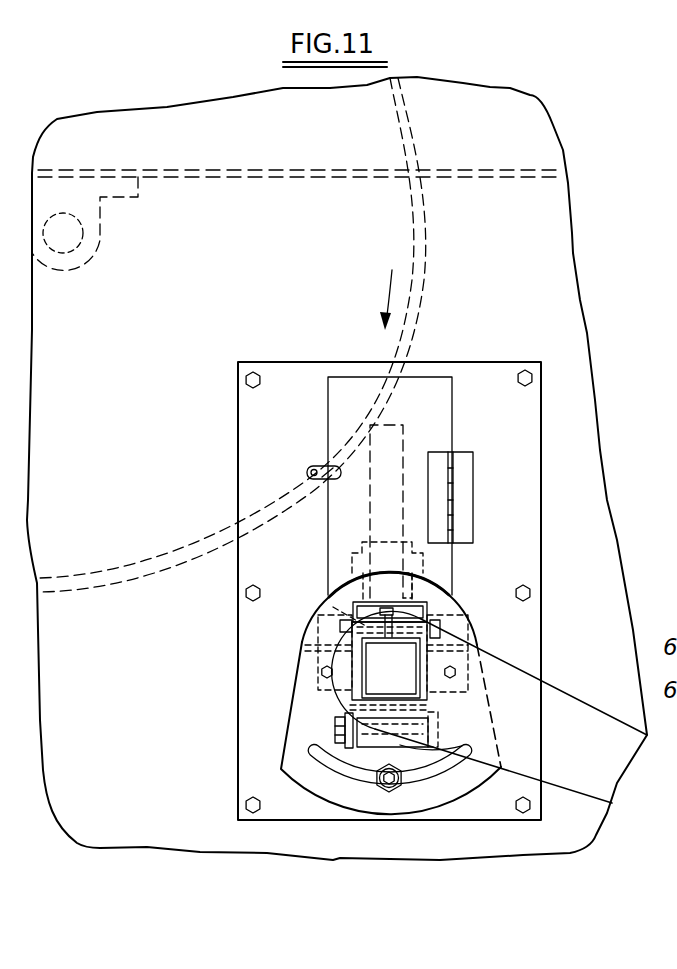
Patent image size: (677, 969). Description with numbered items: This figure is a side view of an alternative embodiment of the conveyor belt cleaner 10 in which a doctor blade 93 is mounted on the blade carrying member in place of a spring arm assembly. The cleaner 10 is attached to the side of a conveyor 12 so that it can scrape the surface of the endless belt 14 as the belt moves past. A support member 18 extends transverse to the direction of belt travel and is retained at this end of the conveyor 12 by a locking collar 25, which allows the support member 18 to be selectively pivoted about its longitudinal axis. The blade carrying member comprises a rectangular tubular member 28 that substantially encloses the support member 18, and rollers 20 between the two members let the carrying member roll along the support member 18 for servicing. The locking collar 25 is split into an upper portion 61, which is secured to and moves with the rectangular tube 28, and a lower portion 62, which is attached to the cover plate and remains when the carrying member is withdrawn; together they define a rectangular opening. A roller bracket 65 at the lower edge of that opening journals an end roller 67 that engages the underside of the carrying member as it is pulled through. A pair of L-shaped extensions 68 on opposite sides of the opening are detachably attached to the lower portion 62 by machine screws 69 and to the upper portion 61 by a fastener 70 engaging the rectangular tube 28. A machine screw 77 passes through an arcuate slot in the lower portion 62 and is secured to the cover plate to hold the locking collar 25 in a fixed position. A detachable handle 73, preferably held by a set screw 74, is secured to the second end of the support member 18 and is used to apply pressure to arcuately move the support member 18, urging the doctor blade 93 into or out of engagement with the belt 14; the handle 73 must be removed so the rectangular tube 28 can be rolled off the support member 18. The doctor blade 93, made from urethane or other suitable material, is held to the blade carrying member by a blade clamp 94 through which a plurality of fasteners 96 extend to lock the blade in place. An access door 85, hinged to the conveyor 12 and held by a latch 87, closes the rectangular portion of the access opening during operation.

The conveyor belt cleaner 10 is at (503, 353).
The conveyor 12 is at (606, 295).
The endless belt 14 is at (427, 228).
The support member 18 is at (420, 694).
The rollers 20 is at (427, 610).
The locking collar 25 is at (302, 722).
The rectangular tubular member 28 is at (343, 698).
The upper portion 61 is at (342, 604).
The lower portion 62 is at (292, 753).
The roller bracket 65 is at (348, 745).
The end roller 67 is at (403, 745).
The L-shaped extensions 68 is at (457, 628).
The machine screws 69 is at (320, 672).
The fastener 70 is at (340, 630).
The detachable handle 73 is at (578, 710).
The set screw 74 is at (333, 607).
The machine screw 77 is at (393, 790).
The access door 85 is at (443, 415).
The latch 87 is at (317, 466).
The doctor blade 93 is at (385, 438).
The blade clamp 94 is at (352, 547).
The fasteners 96 is at (423, 567).